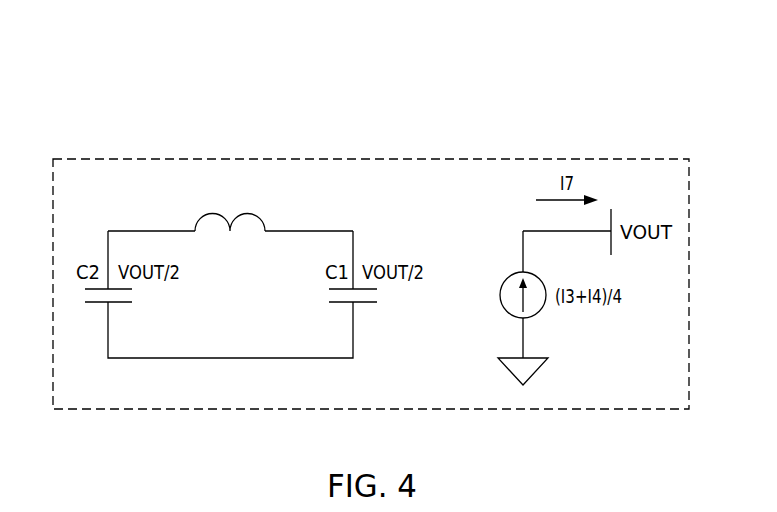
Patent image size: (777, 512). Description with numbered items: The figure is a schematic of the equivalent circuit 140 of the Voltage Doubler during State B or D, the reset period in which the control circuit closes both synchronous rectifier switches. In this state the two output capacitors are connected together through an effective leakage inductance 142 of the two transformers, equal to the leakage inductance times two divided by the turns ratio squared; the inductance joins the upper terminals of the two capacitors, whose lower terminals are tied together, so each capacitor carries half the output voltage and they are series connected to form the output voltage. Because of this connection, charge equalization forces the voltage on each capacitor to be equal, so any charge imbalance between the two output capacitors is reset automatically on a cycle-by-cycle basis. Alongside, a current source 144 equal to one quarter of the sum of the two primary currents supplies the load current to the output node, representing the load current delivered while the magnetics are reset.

The equivalent circuit 140 is at (121, 122).
The effective leakage inductance 142 is at (262, 218).
The current source 144 is at (500, 292).